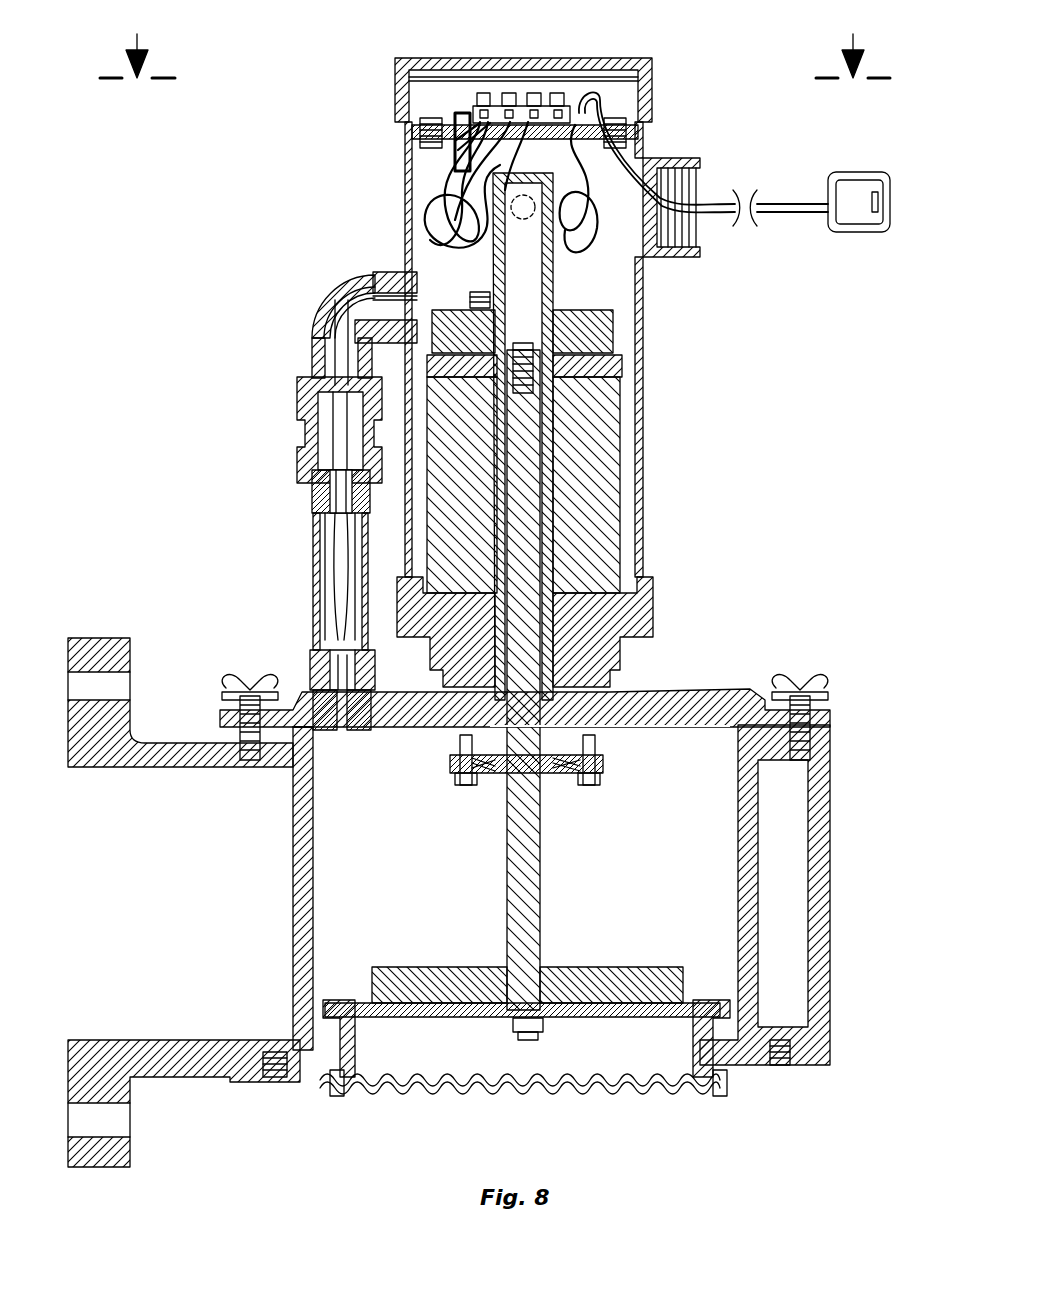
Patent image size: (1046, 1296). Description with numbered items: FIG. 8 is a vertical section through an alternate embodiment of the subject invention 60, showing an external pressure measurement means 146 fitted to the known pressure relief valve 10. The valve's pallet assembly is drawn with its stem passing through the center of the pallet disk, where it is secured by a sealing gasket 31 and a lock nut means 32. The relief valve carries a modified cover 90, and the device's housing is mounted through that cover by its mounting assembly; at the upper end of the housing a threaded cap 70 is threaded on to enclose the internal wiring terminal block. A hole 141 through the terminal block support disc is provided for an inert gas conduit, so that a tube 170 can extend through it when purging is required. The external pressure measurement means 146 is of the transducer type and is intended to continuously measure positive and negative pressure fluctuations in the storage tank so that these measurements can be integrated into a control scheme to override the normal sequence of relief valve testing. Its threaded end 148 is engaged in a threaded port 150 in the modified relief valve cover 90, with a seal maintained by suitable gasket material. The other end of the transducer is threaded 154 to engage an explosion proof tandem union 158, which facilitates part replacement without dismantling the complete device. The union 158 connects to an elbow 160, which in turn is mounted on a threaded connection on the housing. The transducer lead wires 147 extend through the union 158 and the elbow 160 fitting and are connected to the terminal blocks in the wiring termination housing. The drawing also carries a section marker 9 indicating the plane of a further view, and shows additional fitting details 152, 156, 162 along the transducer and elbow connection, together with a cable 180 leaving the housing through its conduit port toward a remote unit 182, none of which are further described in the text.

The section line 9 is at (495, 44).
The pressure relief valve 10 is at (846, 863).
The sealing gasket 31 is at (520, 1012).
The lock nut means 32 is at (535, 1028).
The subject invention 60 is at (697, 422).
The threaded cap 70 is at (650, 62).
The modified cover 90 is at (723, 685).
The hole 141 is at (453, 112).
The external pressure measurement means 146 is at (313, 560).
The transducer lead wires 147 is at (340, 332).
The threaded end 148 is at (385, 706).
The threaded port 150 is at (295, 735).
The conduit fitting 152 is at (312, 660).
The threaded end 154 is at (318, 500).
The compression coupling 156 is at (318, 480).
The explosion proof tandem union 158 is at (297, 432).
The elbow 160 is at (332, 288).
The threaded nipple 162 is at (400, 274).
The tube 170 is at (465, 152).
The cable 180 is at (722, 197).
The remote sensor/indicator 182 is at (855, 172).